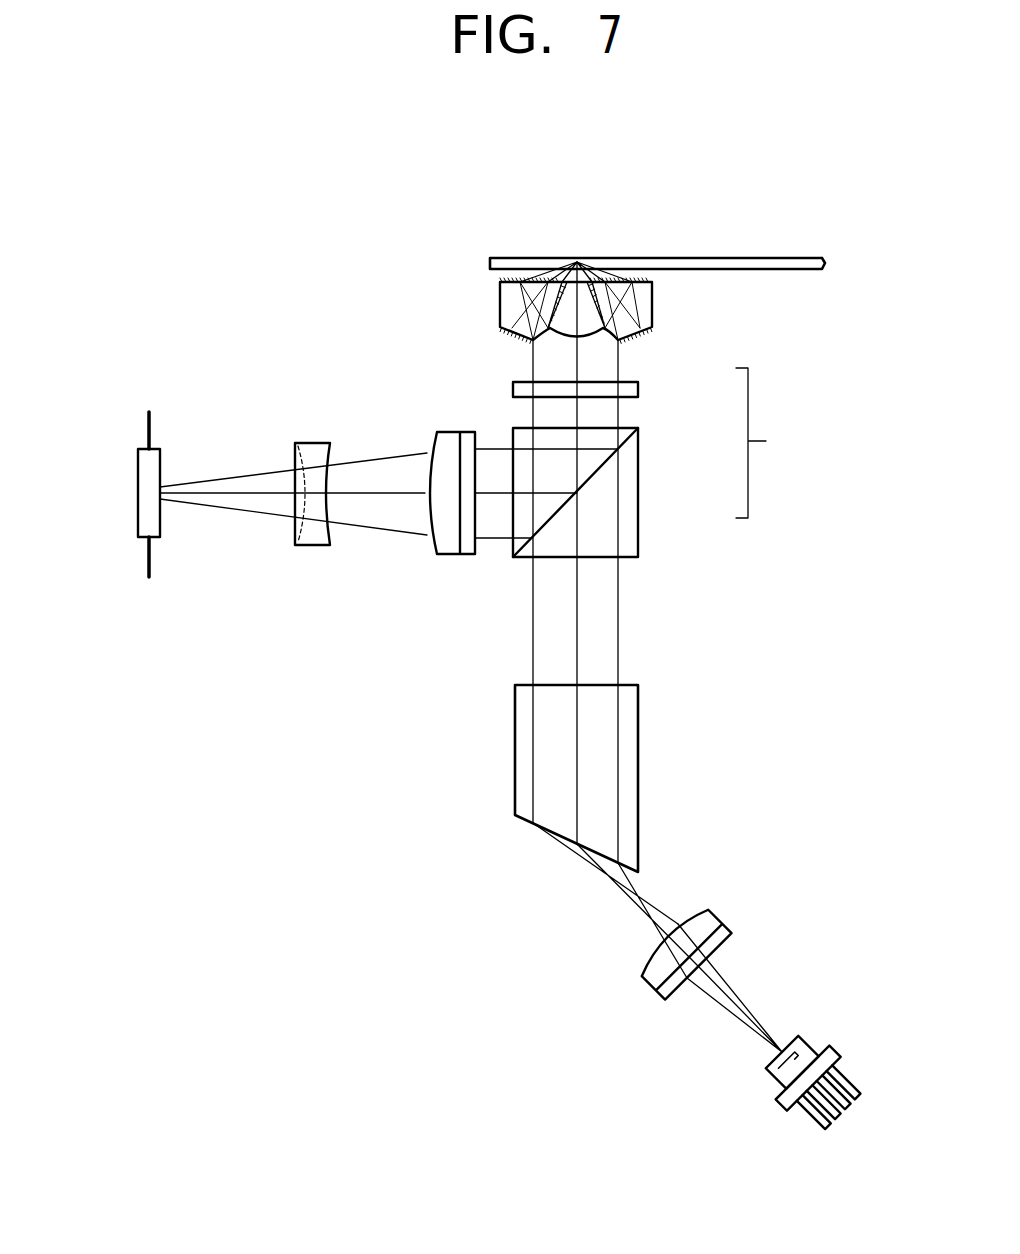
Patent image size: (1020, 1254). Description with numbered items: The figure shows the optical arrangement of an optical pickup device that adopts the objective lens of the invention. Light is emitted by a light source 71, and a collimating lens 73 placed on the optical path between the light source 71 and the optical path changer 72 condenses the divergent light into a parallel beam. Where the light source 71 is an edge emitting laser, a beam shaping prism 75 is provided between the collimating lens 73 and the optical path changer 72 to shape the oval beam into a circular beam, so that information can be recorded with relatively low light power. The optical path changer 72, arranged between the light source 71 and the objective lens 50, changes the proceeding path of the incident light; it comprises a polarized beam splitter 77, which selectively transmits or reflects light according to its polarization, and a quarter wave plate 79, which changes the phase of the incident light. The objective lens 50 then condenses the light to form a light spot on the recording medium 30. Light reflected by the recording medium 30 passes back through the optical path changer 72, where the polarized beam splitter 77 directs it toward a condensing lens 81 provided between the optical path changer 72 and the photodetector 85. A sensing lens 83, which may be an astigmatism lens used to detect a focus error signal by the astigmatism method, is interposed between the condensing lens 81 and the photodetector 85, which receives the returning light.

The recording medium 30 is at (742, 258).
The objective lens 50 is at (652, 305).
The light source 71 is at (836, 1050).
The optical path changer 72 is at (770, 443).
The collimating lens 73 is at (733, 932).
The beam shaping prism 75 is at (640, 775).
The polarized beam splitter 77 is at (640, 503).
The quarter wave plate 79 is at (640, 390).
The condensing lens 81 is at (465, 432).
The sensing lens 83 is at (311, 443).
The photodetector 85 is at (138, 483).